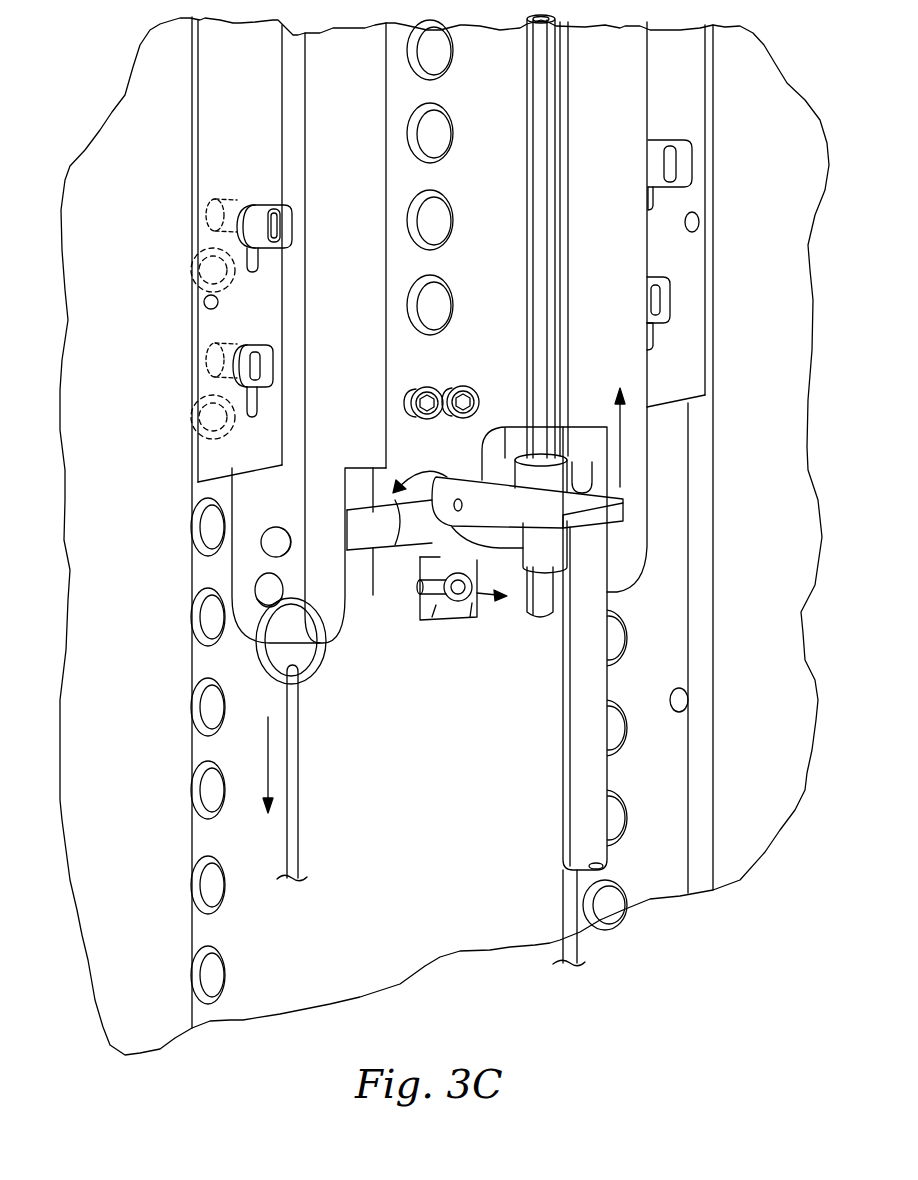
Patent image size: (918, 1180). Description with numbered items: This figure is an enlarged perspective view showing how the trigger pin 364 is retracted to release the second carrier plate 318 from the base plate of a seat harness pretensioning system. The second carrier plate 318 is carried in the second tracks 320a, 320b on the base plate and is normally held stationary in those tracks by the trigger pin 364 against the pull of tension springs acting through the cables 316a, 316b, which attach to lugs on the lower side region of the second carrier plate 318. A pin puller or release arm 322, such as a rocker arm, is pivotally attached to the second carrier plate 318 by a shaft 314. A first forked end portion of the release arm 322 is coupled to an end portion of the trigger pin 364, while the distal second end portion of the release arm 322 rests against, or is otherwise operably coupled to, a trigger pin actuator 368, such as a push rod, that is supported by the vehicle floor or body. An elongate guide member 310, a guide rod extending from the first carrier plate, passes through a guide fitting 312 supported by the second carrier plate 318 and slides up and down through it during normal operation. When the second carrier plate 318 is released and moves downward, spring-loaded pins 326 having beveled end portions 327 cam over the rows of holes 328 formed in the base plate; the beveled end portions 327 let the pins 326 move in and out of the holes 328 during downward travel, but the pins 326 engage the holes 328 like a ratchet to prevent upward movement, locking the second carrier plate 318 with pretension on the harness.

The elongate guide member 310 is at (540, 610).
The guide fitting 312 is at (508, 570).
The shaft 314 is at (373, 600).
The cable 316a is at (300, 850).
The cable 316b is at (567, 903).
The second carrier plate 318 is at (507, 338).
The second track 320a is at (200, 788).
The second track 320b is at (687, 708).
The release arm 322 is at (622, 507).
The spring-loaded pins 326 is at (290, 230).
The beveled end portions 327 is at (206, 216).
The holes 328 is at (208, 622).
The trigger pin 364 is at (473, 603).
The trigger pin actuator 368 is at (598, 812).